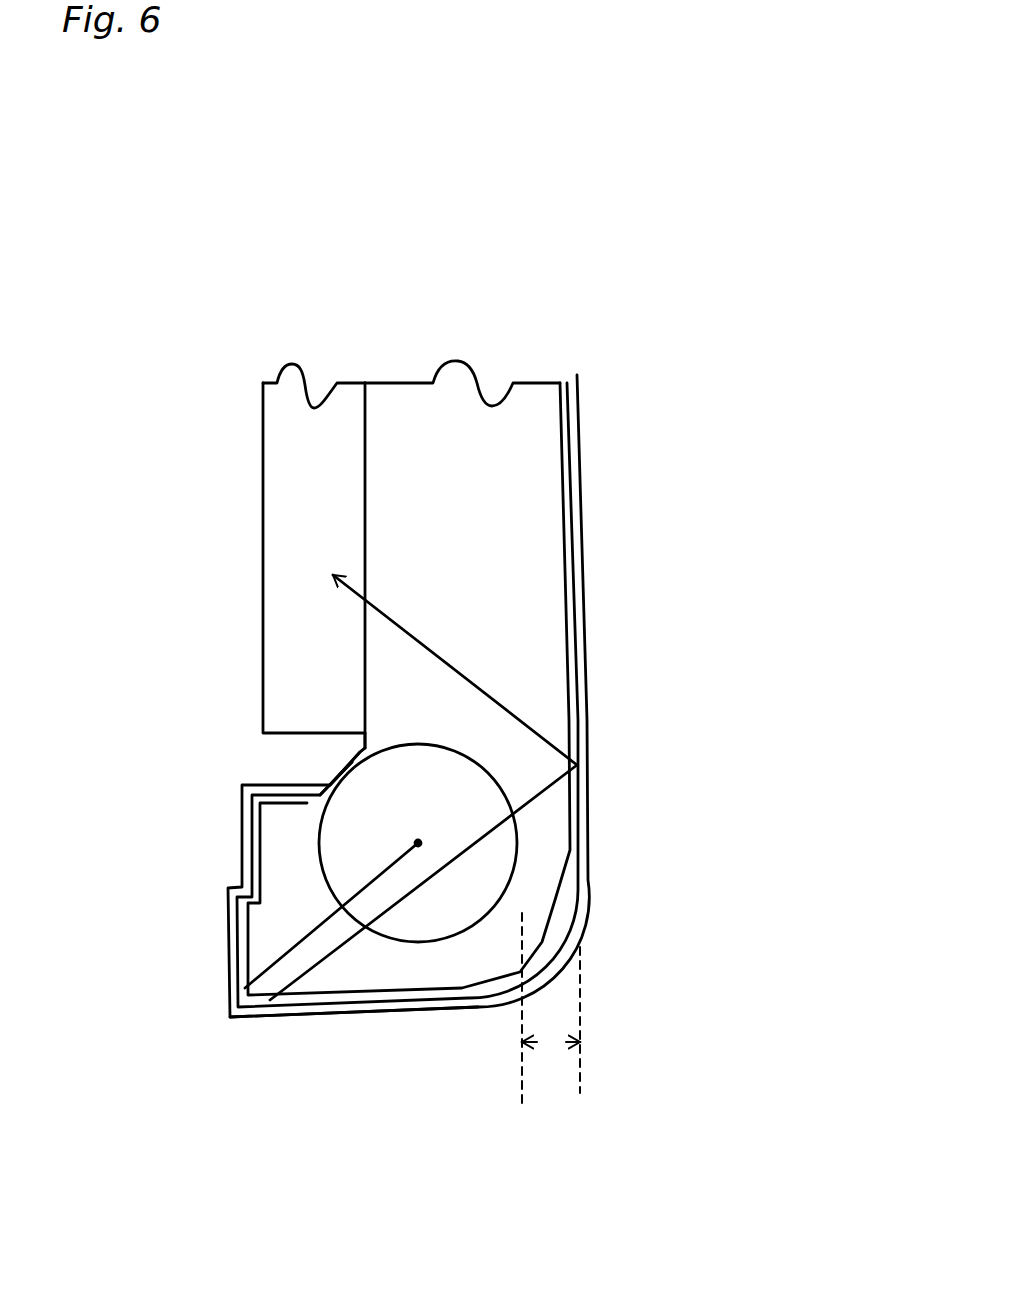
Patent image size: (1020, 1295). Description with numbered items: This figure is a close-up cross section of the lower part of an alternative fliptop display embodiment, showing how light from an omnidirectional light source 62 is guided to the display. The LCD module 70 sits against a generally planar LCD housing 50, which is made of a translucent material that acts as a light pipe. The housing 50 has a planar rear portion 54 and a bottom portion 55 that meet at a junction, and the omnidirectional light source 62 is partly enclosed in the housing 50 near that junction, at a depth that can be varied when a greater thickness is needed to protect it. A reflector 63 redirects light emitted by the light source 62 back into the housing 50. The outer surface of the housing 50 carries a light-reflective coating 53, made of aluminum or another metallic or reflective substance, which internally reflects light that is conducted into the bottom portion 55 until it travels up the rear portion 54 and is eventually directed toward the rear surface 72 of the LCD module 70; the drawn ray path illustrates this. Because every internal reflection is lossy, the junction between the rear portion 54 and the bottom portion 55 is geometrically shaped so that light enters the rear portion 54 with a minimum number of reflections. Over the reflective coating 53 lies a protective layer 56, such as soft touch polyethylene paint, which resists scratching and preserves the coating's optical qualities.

The LCD housing 50 is at (682, 405).
The light-reflective coating 53 is at (572, 540).
The rear portion 54 is at (628, 478).
The bottom portion 55 is at (380, 1028).
The protective layer 56 is at (583, 613).
The omnidirectional light source 62 is at (490, 768).
The reflector 63 is at (327, 765).
The LCD module 70 is at (245, 470).
The rear surface 72 is at (365, 545).